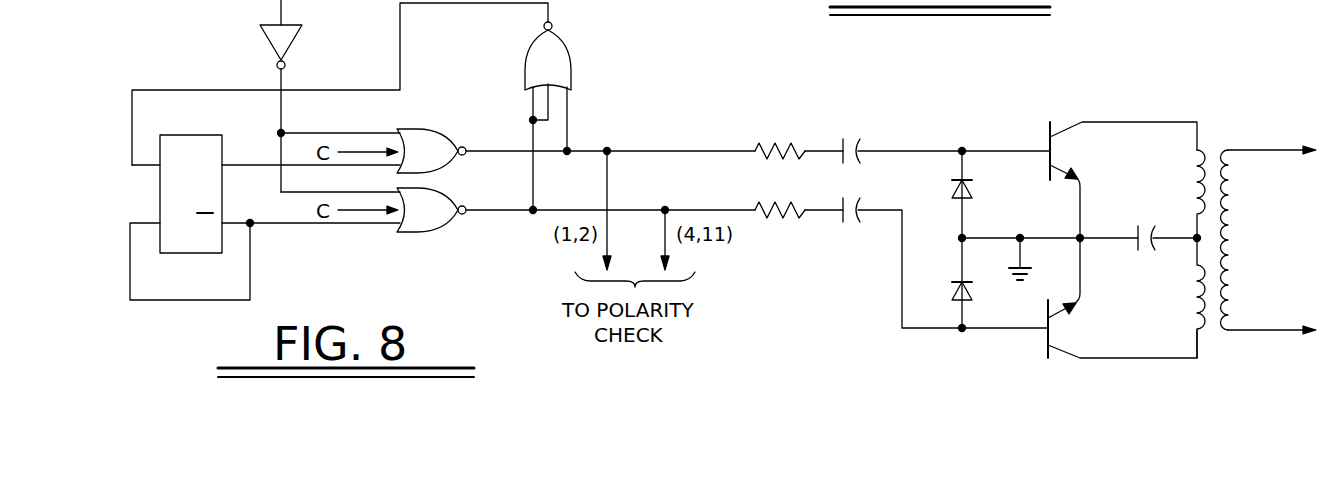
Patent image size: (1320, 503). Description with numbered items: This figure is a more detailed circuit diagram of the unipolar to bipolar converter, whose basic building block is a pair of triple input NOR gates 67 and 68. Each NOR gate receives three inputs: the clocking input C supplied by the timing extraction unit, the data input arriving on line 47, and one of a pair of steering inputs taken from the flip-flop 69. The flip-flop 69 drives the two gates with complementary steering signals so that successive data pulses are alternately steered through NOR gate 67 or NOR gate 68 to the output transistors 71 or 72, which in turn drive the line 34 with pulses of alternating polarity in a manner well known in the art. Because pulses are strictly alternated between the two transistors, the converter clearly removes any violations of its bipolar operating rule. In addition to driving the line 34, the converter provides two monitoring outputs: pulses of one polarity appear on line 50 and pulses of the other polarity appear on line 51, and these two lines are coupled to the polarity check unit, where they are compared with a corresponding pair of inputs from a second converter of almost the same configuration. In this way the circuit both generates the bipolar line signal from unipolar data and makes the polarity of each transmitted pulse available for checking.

The flip-flop 69 is at (170, 134).
The line 47 is at (284, 107).
The NOR gate 67 is at (430, 129).
The NOR gate 68 is at (420, 232).
The line 50 is at (643, 166).
The line 51 is at (663, 245).
The output transistor 71 is at (1048, 128).
The output transistor 72 is at (1048, 347).
The line 34 is at (1301, 262).